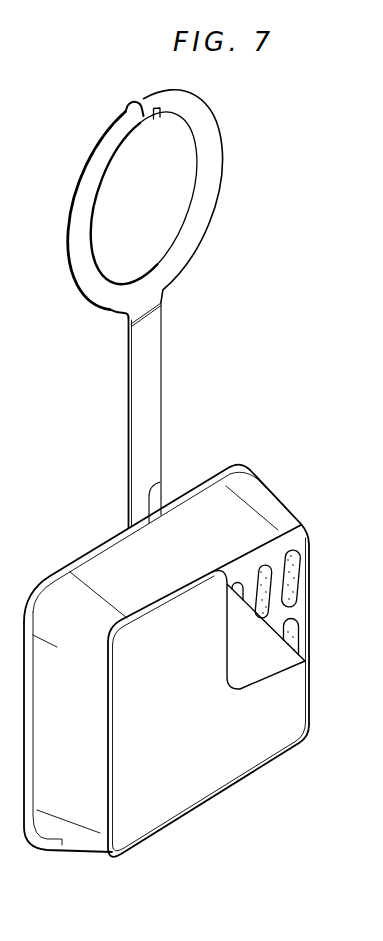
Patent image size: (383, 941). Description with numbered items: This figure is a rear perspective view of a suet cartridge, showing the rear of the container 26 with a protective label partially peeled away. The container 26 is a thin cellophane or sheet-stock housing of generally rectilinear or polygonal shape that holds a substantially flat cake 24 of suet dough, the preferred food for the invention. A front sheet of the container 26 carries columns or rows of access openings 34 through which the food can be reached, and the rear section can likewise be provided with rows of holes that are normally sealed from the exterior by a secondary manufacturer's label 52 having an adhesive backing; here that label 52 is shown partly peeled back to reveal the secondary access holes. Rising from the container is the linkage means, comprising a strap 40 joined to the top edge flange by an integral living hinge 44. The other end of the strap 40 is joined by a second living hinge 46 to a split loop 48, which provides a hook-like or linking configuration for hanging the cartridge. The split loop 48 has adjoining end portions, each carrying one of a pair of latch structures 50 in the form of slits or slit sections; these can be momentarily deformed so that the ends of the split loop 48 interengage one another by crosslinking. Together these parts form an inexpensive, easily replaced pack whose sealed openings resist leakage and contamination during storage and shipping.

The cake 24 is at (299, 568).
The container 26 is at (286, 492).
The access openings 34 is at (299, 632).
The strap 40 is at (148, 400).
The living hinge 44 is at (160, 482).
The second living hinge 46 is at (162, 312).
The split loop 48 is at (246, 152).
The latch structures 50 is at (131, 92).
The secondary manufacturer's label 52 is at (217, 722).